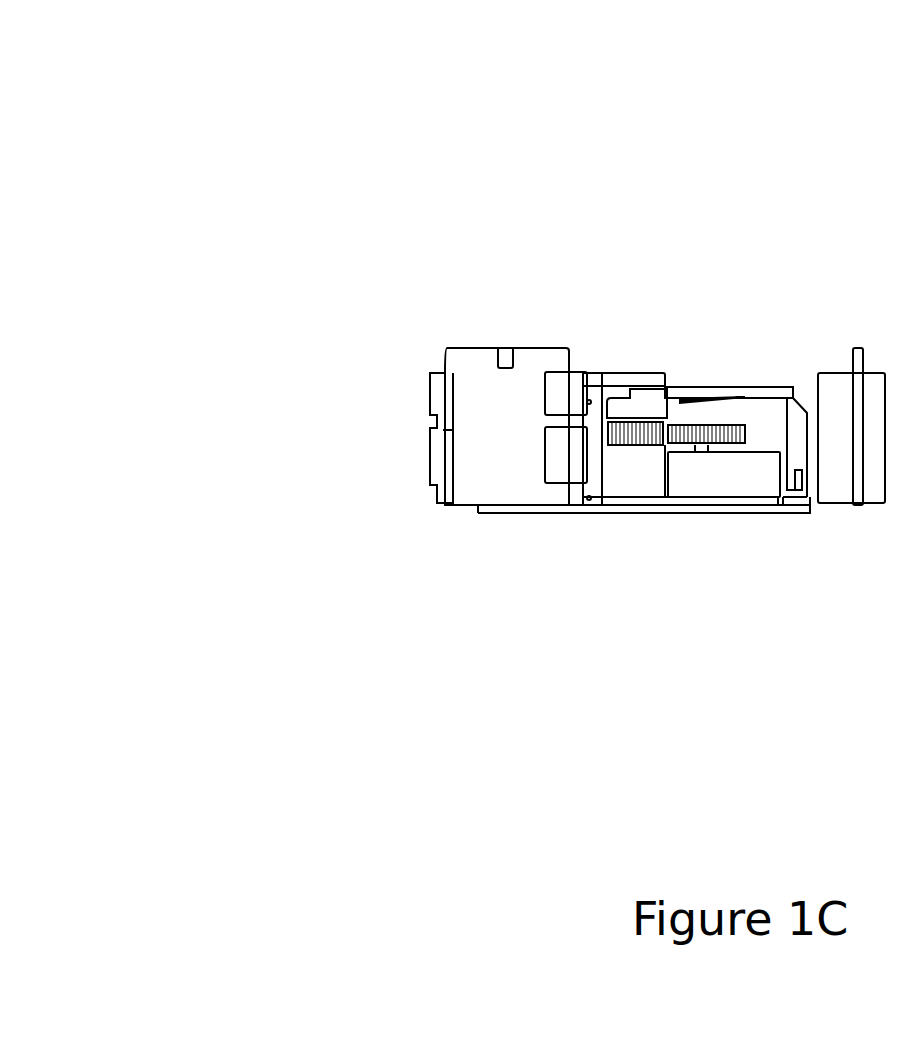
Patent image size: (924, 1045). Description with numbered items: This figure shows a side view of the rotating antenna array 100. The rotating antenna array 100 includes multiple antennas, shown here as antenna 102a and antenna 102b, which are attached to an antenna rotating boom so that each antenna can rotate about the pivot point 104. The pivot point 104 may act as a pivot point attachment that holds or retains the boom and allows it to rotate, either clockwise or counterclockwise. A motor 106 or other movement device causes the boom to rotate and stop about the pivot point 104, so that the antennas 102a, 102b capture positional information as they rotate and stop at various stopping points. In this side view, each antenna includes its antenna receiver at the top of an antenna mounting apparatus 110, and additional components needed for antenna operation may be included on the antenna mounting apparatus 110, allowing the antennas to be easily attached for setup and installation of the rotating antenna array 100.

The rotating antenna array 100 is at (108, 81).
The antenna 102a is at (502, 353).
The antenna 102b is at (862, 348).
The pivot point 104 is at (643, 372).
The motor 106 is at (713, 487).
The antenna mounting apparatus 110 is at (503, 485).